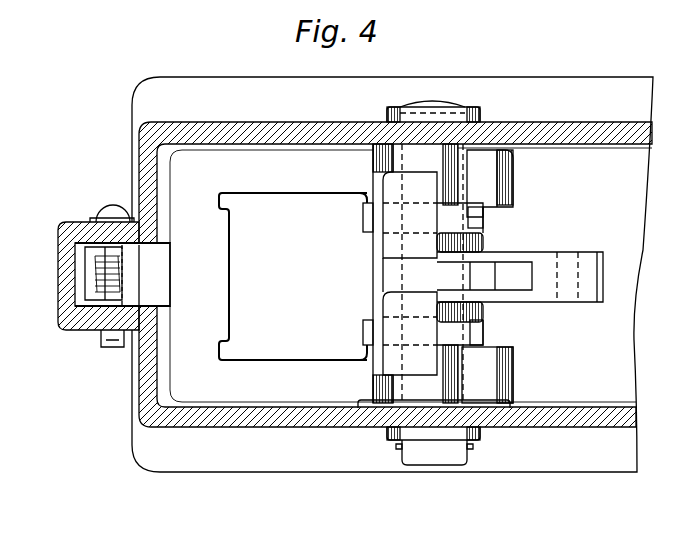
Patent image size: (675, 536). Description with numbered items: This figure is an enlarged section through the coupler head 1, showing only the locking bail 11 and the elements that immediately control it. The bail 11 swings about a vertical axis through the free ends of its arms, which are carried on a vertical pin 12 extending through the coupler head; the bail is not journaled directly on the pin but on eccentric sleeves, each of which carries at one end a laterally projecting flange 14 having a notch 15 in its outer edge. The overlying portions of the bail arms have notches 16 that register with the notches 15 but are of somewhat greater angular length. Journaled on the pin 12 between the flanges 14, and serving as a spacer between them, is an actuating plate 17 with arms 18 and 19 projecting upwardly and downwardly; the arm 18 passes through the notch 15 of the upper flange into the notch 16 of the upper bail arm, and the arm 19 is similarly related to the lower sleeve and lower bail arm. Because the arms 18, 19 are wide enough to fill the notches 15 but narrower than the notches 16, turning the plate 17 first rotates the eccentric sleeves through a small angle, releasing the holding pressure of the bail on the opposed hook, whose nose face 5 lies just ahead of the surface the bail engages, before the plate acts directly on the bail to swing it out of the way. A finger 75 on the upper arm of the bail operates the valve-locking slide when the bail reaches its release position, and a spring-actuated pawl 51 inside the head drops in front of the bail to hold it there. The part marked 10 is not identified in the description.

The housing body 1 is at (323, 128).
The face at the nose of the hook 5 is at (305, 420).
The upper spindle shaft 10 is at (423, 162).
The bail 11 is at (275, 177).
The vertical pin 12 is at (435, 448).
The laterally-projecting flange 14 is at (483, 228).
The notch 15 is at (362, 220).
The notch 16 is at (405, 386).
The actuating plate 17 is at (561, 260).
The arm 18 is at (410, 215).
The arm 19 is at (410, 333).
The spring-actuated pawl 51 is at (133, 272).
The finger 75 is at (495, 207).